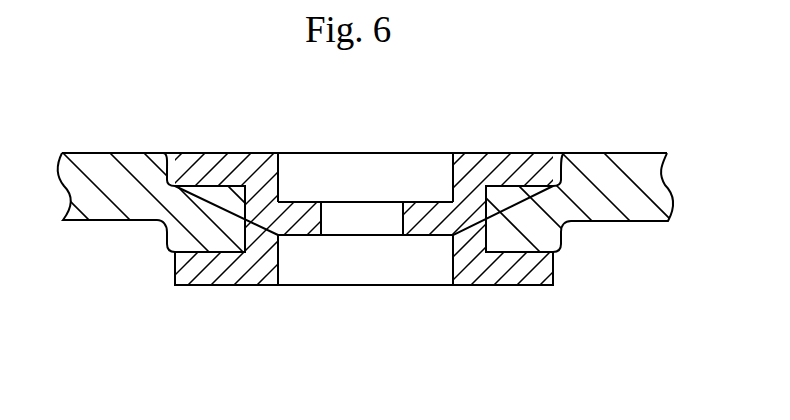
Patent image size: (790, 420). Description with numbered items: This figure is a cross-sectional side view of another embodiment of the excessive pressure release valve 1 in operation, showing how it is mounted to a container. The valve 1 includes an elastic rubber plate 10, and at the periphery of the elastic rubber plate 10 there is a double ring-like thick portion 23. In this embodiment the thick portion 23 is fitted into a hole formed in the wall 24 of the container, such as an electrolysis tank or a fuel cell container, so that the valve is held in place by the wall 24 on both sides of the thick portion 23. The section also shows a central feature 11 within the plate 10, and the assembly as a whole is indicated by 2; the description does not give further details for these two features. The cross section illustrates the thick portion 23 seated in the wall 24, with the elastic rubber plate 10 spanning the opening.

The excessive pressure release valve 1 is at (378, 152).
The assembly 2 is at (467, 307).
The elastic rubber plate 10 is at (292, 210).
The through hole 11 is at (342, 225).
The double ring-like thick portion 23 is at (208, 170).
The wall 24 is at (147, 175).